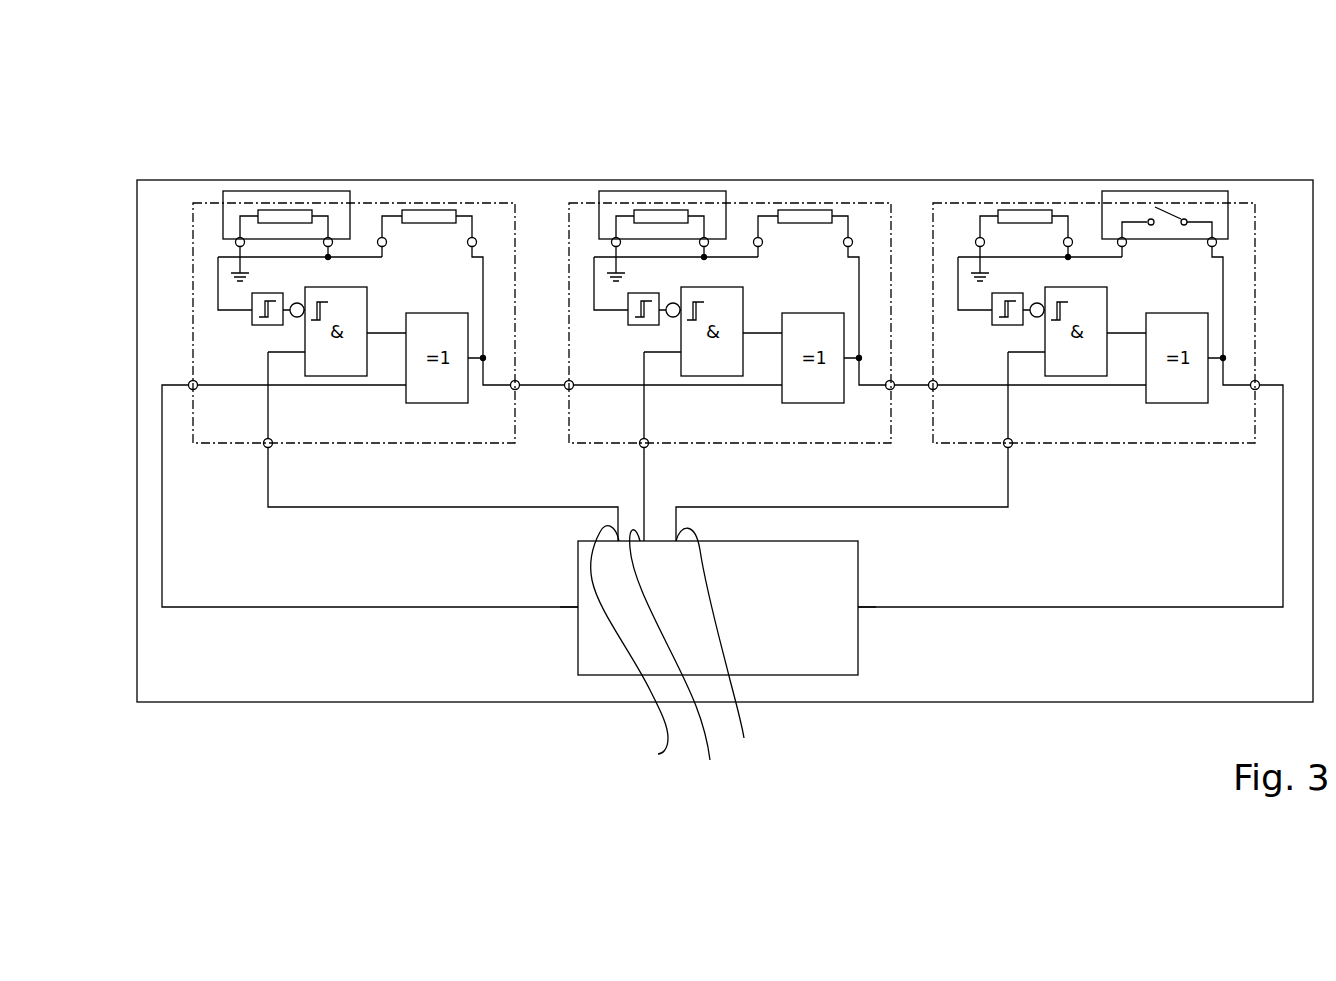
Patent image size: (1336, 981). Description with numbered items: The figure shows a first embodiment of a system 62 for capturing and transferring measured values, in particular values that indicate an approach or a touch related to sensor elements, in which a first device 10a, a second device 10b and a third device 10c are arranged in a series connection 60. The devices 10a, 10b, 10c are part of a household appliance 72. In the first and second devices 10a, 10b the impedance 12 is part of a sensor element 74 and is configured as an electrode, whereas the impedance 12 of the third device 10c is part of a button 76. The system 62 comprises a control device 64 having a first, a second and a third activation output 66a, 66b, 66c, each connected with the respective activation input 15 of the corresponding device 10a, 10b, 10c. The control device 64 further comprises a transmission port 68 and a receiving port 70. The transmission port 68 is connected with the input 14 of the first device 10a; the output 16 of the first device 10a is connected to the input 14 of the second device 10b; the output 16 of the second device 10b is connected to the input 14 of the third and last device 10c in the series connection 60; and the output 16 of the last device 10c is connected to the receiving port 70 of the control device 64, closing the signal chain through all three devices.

The series connection 60 is at (178, 242).
The system 62 is at (248, 113).
The household appliance 72 is at (1099, 251).
The first device 10a is at (488, 223).
The second device 10b is at (863, 222).
The third device 10c is at (1233, 223).
The sensor element 74 is at (307, 191).
The button 76 is at (1165, 191).
The impedance 12 is at (488, 237).
The input 14 is at (191, 381).
The activation input 15 is at (265, 447).
The output 16 is at (518, 389).
The control device 64 is at (777, 621).
The first activation output 66a is at (629, 648).
The second activation output 66b is at (678, 658).
The third activation output 66c is at (723, 645).
The transmission port 68 is at (578, 609).
The receiving port 70 is at (858, 609).